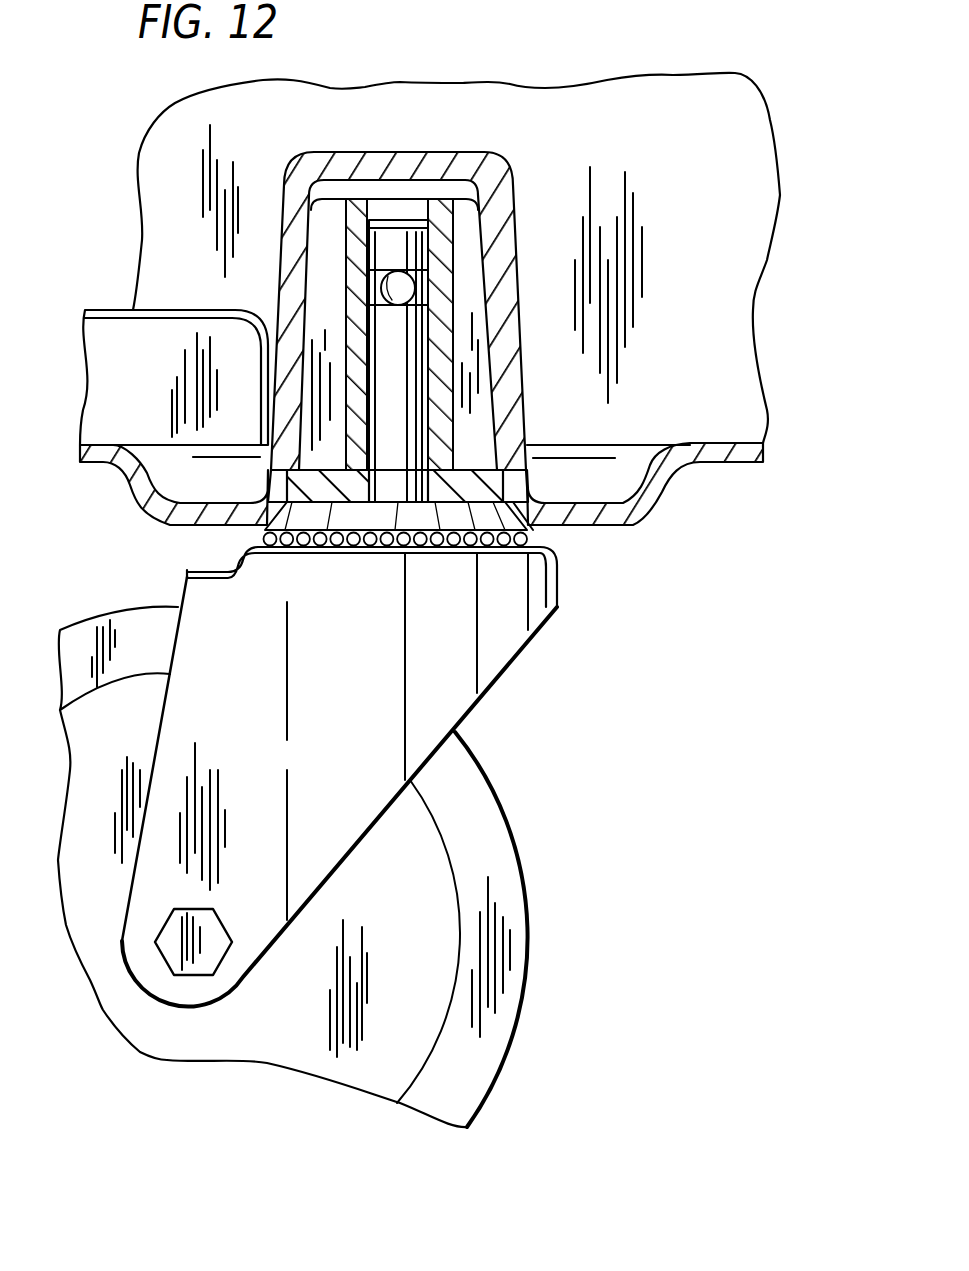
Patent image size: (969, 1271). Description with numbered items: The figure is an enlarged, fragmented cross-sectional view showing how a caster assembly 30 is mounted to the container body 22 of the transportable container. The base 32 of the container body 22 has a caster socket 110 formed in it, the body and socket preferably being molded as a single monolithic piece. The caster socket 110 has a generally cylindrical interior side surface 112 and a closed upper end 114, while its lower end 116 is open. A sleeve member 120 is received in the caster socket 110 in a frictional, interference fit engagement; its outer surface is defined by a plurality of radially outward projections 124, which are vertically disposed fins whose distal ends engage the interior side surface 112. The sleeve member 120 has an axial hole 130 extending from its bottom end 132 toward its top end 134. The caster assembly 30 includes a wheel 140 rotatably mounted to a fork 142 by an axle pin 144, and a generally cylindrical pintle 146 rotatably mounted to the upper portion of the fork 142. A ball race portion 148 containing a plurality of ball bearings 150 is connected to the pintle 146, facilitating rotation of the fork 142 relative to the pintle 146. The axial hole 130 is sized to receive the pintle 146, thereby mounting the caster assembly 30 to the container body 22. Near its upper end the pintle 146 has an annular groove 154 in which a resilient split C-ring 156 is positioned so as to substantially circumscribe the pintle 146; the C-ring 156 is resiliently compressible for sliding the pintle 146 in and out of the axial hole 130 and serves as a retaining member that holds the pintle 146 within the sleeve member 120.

The container body 22 is at (720, 95).
The caster assembly 30 is at (592, 673).
The base 32 is at (713, 467).
The caster socket 110 is at (468, 150).
The interior side surface 112 is at (486, 246).
The closed upper end 114 is at (418, 165).
The lower end 116 is at (520, 482).
The sleeve member 120 is at (330, 184).
The projections 124 is at (325, 240).
The axial hole 130 is at (427, 398).
The bottom end 132 is at (292, 488).
The top end 134 is at (357, 195).
The wheel 140 is at (478, 810).
The fork 142 is at (450, 710).
The axle pin 144 is at (162, 942).
The pintle 146 is at (387, 332).
The ball race portion 148 is at (470, 550).
The ball bearings 150 is at (525, 540).
The annular groove 154 is at (433, 293).
The C-ring 156 is at (403, 283).